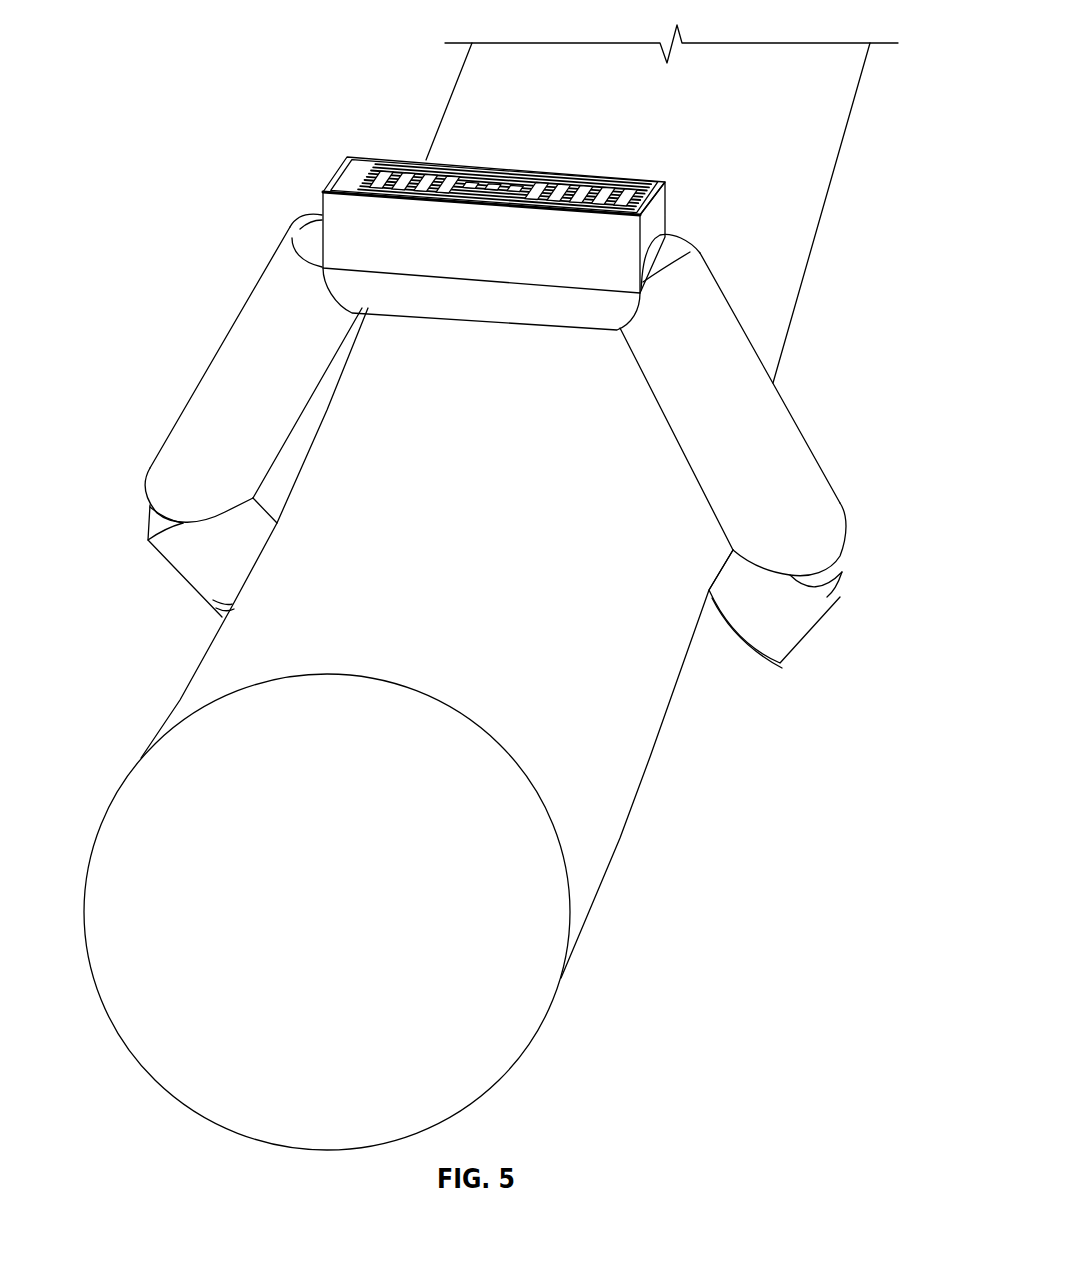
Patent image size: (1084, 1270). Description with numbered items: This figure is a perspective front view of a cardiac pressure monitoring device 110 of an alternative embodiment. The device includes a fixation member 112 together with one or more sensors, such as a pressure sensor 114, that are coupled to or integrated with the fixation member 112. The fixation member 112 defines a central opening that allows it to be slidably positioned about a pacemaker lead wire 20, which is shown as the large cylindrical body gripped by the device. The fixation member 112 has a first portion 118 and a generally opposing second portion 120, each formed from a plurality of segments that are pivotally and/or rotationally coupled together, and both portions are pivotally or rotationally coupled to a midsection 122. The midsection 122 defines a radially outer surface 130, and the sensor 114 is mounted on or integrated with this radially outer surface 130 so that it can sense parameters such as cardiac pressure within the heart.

The pacemaker lead wire 20 is at (622, 833).
The cardiac pressure monitoring device 110 is at (813, 421).
The fixation member 112 is at (845, 505).
The pressure sensor 114 is at (388, 162).
The first portion 118 is at (194, 351).
The second portion 120 is at (792, 386).
The midsection 122 is at (483, 303).
The radially outer surface 130 is at (660, 200).